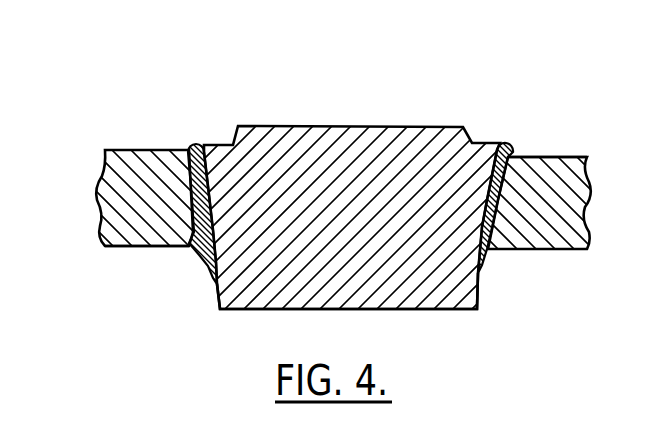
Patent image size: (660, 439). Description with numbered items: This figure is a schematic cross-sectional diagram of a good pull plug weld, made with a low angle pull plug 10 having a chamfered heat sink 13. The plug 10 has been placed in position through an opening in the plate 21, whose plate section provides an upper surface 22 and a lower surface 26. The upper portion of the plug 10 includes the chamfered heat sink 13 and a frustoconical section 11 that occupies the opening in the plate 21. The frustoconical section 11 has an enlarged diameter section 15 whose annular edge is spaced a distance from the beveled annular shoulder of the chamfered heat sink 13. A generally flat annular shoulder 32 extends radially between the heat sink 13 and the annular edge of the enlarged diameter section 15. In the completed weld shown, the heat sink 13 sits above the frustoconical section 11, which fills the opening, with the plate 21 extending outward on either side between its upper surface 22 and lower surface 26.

The pull plug 10 is at (330, 190).
The frustoconical section 11 is at (213, 293).
The chamfered heat sink 13 is at (233, 130).
The enlarged diameter section 15 is at (482, 144).
The plate 21 is at (586, 208).
The upper surface 22 is at (149, 143).
The lower surface 26 is at (150, 256).
The flat annular shoulder 32 is at (215, 145).